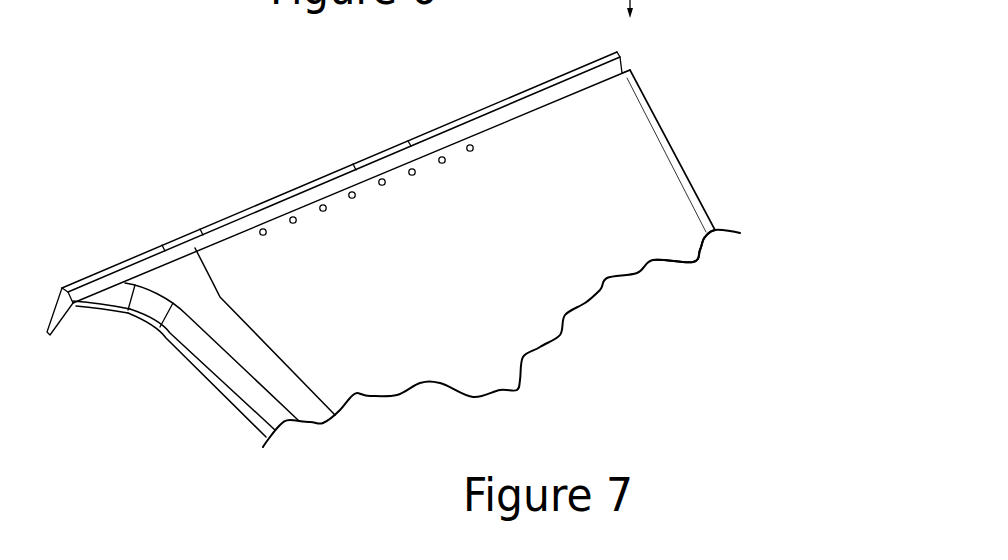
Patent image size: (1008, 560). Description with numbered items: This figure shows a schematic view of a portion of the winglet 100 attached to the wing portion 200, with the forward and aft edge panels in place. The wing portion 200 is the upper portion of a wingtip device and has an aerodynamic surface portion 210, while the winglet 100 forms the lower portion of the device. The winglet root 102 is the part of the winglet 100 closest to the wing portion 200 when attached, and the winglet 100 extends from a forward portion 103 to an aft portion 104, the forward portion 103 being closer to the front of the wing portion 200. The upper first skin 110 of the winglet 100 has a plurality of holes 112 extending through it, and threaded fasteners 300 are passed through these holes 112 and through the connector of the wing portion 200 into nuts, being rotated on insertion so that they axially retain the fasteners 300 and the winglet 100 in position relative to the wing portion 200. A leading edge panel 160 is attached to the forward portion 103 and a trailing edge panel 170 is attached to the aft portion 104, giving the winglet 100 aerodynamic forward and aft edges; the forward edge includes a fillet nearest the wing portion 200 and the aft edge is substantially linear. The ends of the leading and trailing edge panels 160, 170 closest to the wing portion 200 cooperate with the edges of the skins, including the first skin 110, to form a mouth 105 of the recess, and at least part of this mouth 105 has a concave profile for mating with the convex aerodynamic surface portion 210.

The winglet 100 is at (720, 177).
The winglet root 102 is at (517, 135).
The forward portion 103 is at (337, 377).
The aft portion 104 is at (643, 247).
The mouth 105 is at (198, 235).
The upper first skin 110 is at (293, 332).
The holes 112 is at (263, 236).
The leading edge panel 160 is at (212, 357).
The trailing edge panel 170 is at (647, 152).
The wing portion 200 is at (635, 48).
The aerodynamic surface portion 210 is at (70, 310).
The threaded fasteners 300 is at (262, 229).